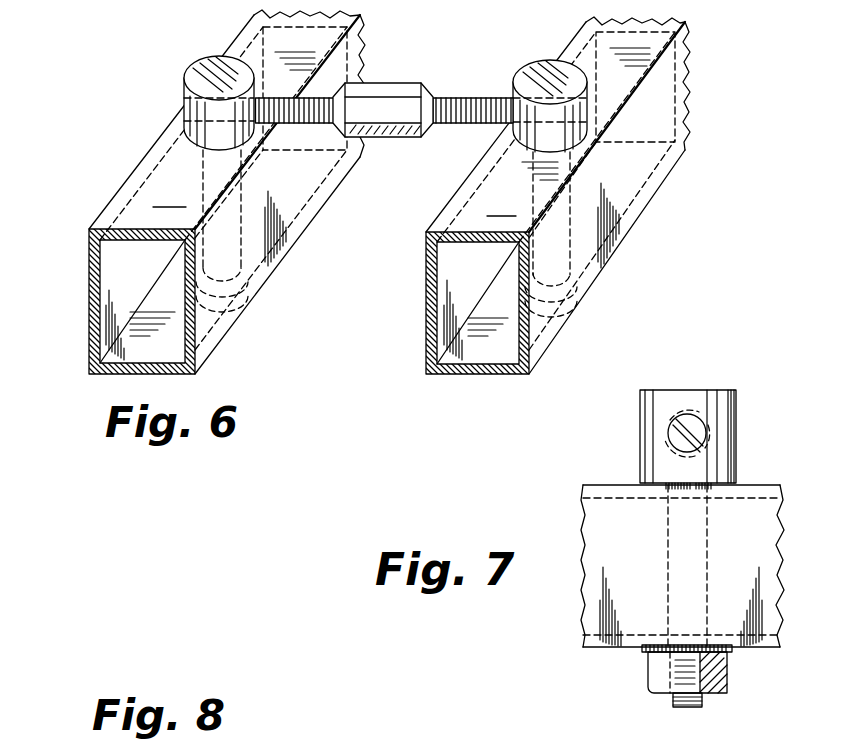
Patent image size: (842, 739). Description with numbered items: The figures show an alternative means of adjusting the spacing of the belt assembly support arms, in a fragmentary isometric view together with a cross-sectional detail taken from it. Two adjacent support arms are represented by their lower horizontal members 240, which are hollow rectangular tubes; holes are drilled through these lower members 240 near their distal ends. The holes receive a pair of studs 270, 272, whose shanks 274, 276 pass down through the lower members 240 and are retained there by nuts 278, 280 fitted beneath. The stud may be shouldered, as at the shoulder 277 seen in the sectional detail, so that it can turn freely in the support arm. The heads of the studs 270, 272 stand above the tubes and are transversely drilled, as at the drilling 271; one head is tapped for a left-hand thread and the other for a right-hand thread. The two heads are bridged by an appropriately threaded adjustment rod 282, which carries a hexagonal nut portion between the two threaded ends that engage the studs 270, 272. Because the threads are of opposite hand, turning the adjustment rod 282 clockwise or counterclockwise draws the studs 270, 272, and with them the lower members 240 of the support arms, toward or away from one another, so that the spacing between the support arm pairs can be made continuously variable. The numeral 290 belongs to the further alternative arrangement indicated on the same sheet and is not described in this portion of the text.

In FIG. 6, the lower horizontal member 240 is at (425, 332).
In FIG. 7, the lower horizontal member 240 is at (600, 486).
In FIG. 6, the stud 270 is at (200, 66).
In FIG. 7, the stud 270 is at (653, 414).
In FIG. 7, the transverse drilling 271 is at (682, 436).
In FIG. 6, the stud 272 is at (535, 61).
In FIG. 6, the shank 274 is at (241, 219).
In FIG. 7, the shank 274 is at (672, 580).
In FIG. 6, the shank 276 is at (533, 163).
In FIG. 7, the shoulder 277 is at (692, 654).
In FIG. 6, the nut 278 is at (250, 297).
In FIG. 7, the nut 278 is at (656, 688).
In FIG. 6, the nut 280 is at (528, 290).
In FIG. 6, the adjustment rod 282 is at (390, 83).
In FIG. 8, the frame assembly 290 is at (324, 726).